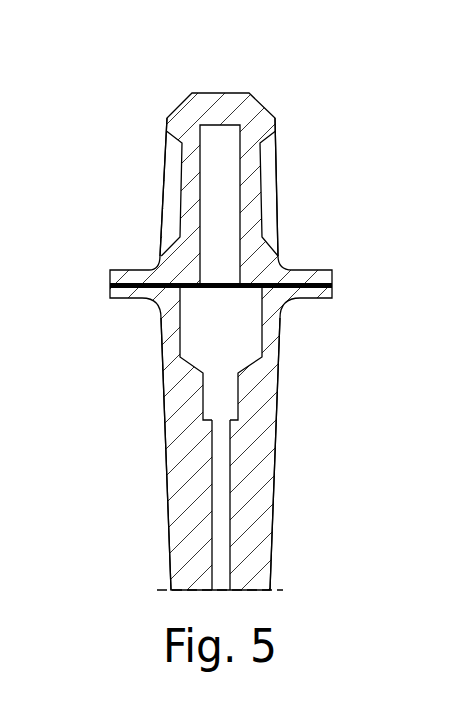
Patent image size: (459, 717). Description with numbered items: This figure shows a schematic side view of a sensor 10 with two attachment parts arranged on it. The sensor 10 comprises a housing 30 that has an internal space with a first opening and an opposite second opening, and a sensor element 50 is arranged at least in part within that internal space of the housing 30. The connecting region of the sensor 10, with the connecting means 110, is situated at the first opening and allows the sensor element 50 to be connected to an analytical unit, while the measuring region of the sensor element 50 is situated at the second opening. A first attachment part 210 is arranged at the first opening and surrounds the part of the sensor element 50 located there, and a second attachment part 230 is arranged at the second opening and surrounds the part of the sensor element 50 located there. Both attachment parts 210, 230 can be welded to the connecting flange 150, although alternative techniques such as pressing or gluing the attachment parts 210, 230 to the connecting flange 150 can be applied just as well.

The sensor 10 is at (255, 113).
The second attachment part 230 is at (166, 173).
The sensor element 50 is at (223, 190).
The connecting flange 150 is at (248, 283).
The housing 30 is at (244, 340).
The connecting means 110 is at (220, 483).
The first attachment part 210 is at (167, 540).